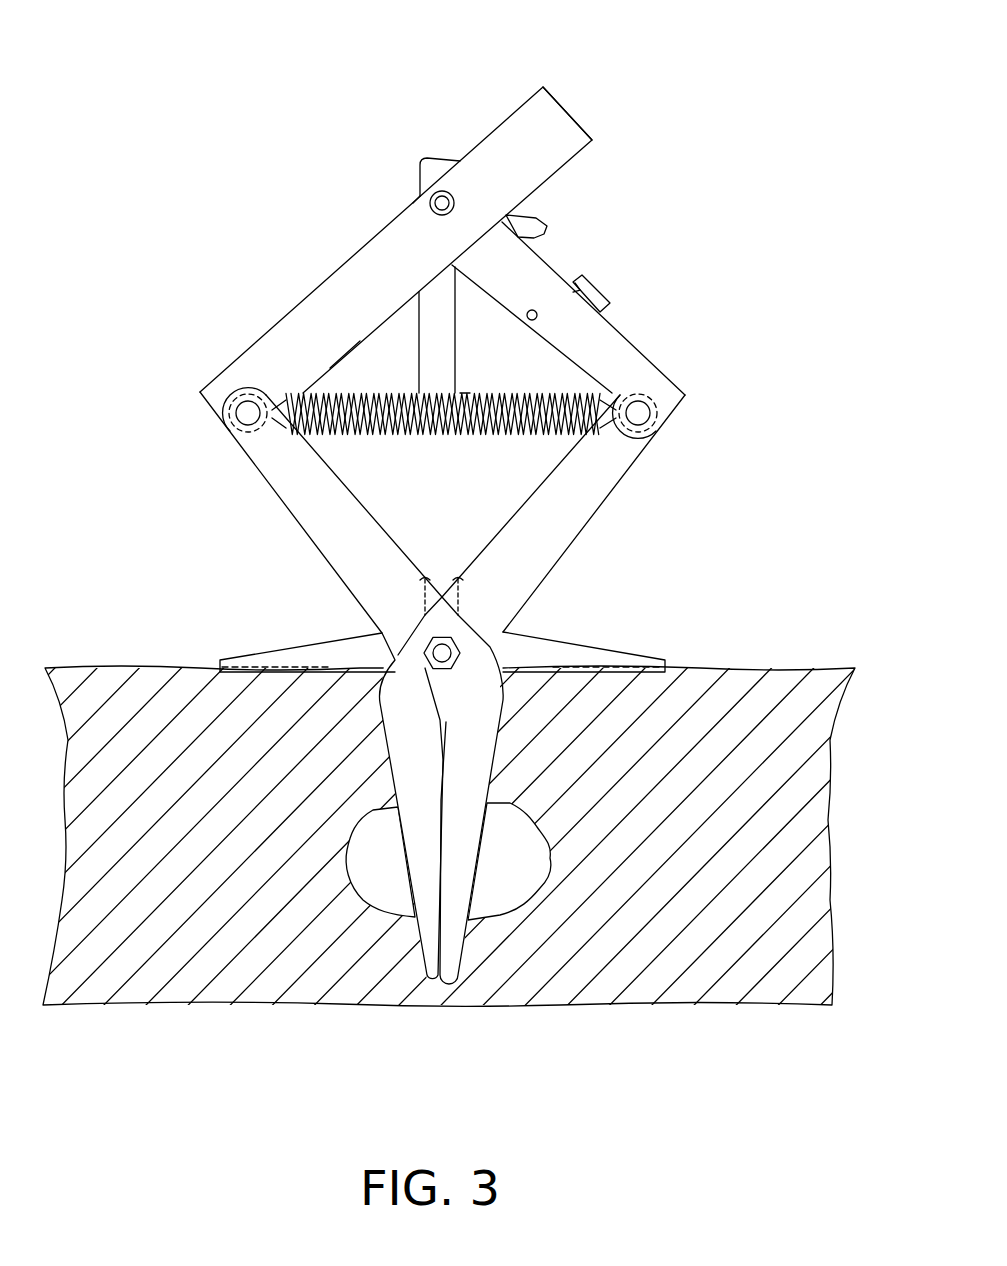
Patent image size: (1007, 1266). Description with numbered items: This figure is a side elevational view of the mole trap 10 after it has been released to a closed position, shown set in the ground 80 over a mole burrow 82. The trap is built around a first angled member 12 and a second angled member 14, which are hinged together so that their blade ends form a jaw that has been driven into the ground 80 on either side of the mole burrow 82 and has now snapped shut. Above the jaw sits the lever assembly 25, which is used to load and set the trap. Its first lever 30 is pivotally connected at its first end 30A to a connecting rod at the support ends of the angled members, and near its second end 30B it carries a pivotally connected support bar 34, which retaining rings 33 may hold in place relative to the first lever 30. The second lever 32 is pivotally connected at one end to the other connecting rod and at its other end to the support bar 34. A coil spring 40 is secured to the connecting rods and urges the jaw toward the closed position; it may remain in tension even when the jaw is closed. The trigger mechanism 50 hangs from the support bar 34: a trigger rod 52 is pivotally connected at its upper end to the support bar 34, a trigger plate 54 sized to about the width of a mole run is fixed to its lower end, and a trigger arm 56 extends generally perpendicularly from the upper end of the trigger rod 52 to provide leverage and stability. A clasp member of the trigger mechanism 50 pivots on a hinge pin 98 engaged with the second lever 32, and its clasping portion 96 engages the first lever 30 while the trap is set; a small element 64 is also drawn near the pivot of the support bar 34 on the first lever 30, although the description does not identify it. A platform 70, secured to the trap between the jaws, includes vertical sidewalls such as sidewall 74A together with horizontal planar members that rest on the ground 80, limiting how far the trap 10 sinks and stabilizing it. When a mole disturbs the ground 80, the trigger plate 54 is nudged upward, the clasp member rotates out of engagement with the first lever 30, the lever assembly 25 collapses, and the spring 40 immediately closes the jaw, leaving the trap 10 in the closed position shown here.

The mole trap 10 is at (226, 58).
The first angled member 12 is at (280, 490).
The second angled member 14 is at (627, 457).
The lever assembly 25 is at (298, 240).
The first lever 30 is at (371, 232).
The first end of first lever 30A is at (233, 362).
The second end of first lever 30B is at (526, 88).
The second lever 32 is at (627, 347).
The retaining rings 33 is at (418, 198).
The support bar 34 is at (455, 196).
The coil spring 40 is at (418, 436).
The trigger mechanism 50 is at (398, 333).
The trigger rod 52 is at (450, 330).
The trigger plate 54 is at (466, 391).
The trigger arm 56 is at (533, 213).
The bracket 64 is at (437, 158).
The platform 70 is at (588, 632).
The vertical sidewall 74A is at (297, 648).
The ground 80 is at (815, 867).
The mole burrow 82 is at (520, 892).
The clasping portion 96 is at (595, 290).
The hinge pin 98 is at (533, 310).